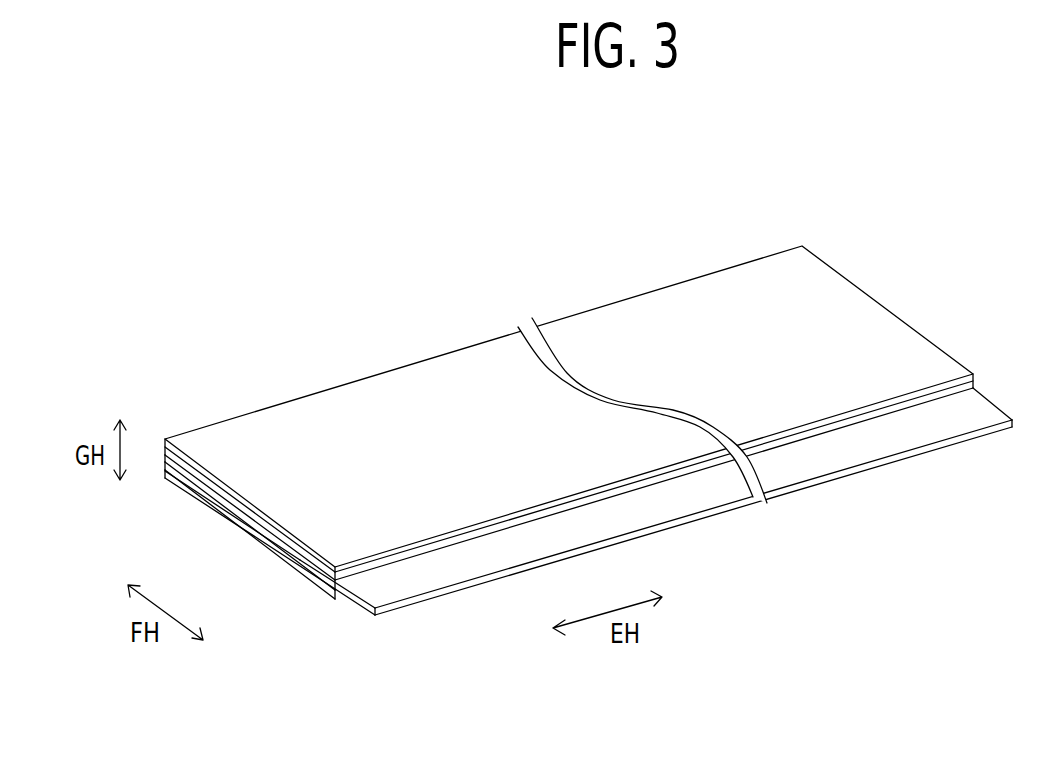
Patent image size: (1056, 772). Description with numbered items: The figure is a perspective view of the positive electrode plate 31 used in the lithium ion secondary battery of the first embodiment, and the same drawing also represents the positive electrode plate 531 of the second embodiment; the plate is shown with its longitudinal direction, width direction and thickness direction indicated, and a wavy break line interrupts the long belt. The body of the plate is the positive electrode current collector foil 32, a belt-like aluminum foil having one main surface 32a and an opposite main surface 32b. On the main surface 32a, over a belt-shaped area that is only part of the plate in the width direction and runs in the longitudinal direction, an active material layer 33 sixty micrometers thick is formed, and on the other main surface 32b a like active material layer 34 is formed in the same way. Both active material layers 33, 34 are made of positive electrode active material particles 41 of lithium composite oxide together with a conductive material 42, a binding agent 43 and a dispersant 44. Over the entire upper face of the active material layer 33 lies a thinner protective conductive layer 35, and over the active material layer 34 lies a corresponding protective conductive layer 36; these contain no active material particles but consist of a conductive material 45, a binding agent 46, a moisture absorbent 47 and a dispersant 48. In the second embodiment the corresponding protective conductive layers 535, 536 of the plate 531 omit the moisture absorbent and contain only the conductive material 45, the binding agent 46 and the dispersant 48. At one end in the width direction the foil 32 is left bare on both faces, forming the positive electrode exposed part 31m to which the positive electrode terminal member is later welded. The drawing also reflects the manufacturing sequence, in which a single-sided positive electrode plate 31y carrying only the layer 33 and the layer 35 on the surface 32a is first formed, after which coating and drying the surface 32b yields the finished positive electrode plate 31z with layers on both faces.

The positive electrode plate 31 is at (526, 469).
The single-sided positive electrode plate 31y is at (526, 469).
The positive electrode plate 31z is at (526, 469).
The positive electrode plate 531 is at (358, 322).
The positive electrode exposed part 31m is at (875, 450).
The positive electrode current collector foil 32 is at (680, 497).
The main surface 32a is at (488, 562).
The main surface 32b is at (446, 597).
The active material layer 33 is at (207, 465).
The active material layer 34 is at (168, 473).
The protective conductive layer 35 is at (569, 391).
The protective conductive layer 36 is at (275, 603).
The protective conductive layer 535 is at (569, 391).
The protective conductive layer 536 is at (323, 587).
The positive electrode active material particles 41 is at (207, 465).
The conductive material 42 is at (207, 465).
The binding agent 43 is at (207, 465).
The dispersant 44 is at (165, 438).
The conductive material 45 is at (569, 391).
The binding agent 46 is at (569, 391).
The moisture absorbent 47 is at (569, 391).
The dispersant 48 is at (660, 338).